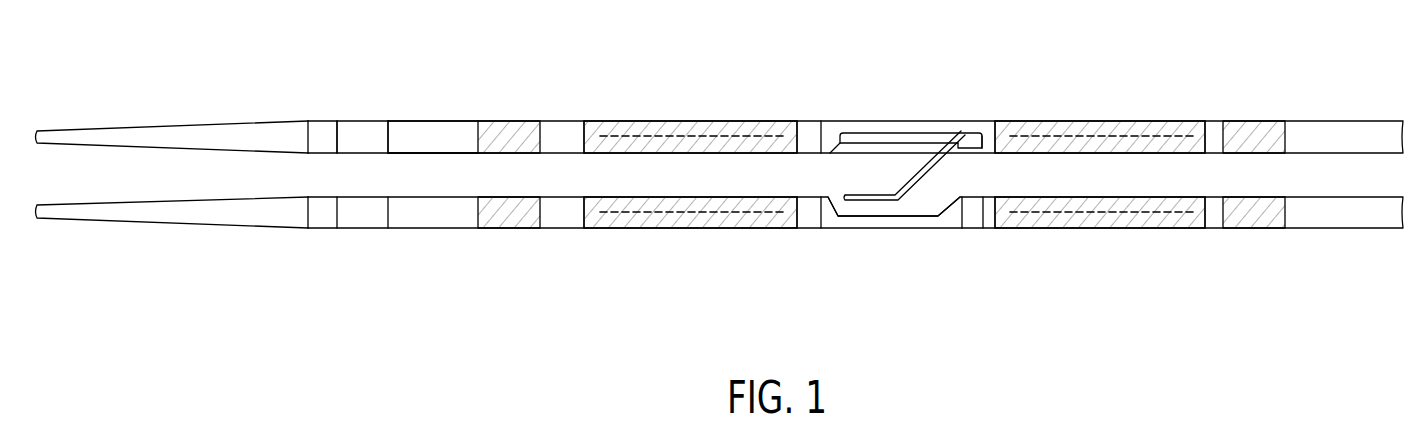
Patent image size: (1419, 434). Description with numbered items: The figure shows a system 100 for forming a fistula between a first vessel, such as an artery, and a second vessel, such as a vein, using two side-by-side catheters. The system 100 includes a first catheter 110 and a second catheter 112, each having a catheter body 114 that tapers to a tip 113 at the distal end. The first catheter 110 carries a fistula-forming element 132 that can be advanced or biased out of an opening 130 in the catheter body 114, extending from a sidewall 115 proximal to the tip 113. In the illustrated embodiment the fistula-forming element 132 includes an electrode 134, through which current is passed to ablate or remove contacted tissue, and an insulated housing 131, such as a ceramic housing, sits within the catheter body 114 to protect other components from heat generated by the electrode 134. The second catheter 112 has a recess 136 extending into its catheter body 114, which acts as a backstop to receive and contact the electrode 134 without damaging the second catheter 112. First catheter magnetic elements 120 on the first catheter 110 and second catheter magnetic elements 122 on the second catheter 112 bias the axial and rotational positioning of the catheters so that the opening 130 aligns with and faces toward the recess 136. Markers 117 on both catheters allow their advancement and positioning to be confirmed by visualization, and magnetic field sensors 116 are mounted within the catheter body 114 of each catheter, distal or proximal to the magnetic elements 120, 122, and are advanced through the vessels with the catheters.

The system 100 is at (290, 293).
The first catheter 110 is at (300, 98).
The second catheter 112 is at (428, 256).
The tip 113 is at (34, 128).
The catheter body 114 is at (563, 130).
The sidewall 115 is at (437, 155).
The magnetic field sensor 116 is at (1290, 272).
The marker 117 is at (367, 197).
The first catheter magnetic element 120 is at (1090, 120).
The second catheter magnetic element 122 is at (1098, 228).
The opening 130 is at (840, 127).
The insulated housing 131 is at (972, 130).
The fistula-forming element 132 is at (908, 138).
The electrode 134 is at (948, 140).
The recess 136 is at (913, 228).